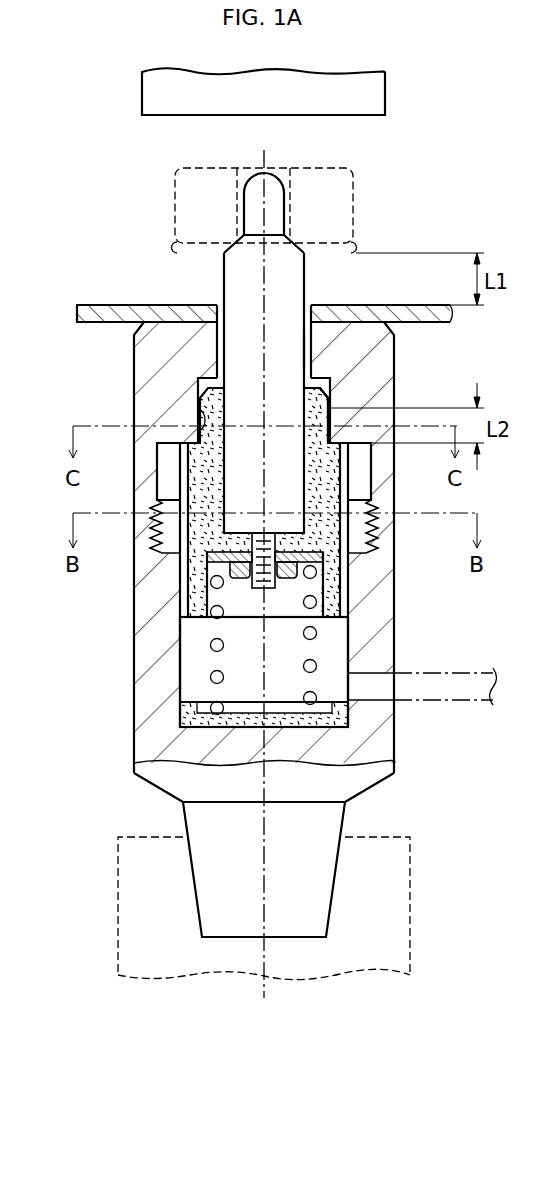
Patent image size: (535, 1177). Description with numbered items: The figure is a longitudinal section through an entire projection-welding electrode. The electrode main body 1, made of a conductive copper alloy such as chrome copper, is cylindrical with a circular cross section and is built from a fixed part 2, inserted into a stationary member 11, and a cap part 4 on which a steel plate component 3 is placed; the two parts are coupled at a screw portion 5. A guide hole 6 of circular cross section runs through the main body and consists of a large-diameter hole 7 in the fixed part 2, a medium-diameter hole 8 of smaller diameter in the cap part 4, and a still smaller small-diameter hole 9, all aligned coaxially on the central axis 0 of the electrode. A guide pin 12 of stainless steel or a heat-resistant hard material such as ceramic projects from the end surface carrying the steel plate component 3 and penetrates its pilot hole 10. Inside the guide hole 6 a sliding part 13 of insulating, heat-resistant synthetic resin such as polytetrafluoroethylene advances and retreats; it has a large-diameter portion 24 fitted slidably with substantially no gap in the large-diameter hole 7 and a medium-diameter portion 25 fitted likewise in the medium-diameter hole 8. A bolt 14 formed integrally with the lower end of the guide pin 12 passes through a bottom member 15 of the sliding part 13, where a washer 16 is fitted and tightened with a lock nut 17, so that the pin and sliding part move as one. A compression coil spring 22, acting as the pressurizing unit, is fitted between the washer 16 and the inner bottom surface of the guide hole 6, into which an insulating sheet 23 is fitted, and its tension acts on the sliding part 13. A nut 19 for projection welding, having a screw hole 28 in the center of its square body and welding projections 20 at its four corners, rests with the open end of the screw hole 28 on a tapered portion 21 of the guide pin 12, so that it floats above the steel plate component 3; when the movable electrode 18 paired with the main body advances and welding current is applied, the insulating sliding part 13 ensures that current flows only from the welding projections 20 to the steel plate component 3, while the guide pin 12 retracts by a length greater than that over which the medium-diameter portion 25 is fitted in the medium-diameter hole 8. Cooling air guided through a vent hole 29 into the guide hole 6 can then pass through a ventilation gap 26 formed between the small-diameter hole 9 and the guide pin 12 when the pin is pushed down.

The central axis 0 is at (263, 576).
The electrode main body 1 is at (94, 376).
The fixed part 2 is at (134, 752).
The steel plate component 3 is at (102, 305).
The cap part 4 is at (134, 357).
The screw portion 5 is at (156, 540).
The guide hole 6 is at (194, 665).
The large-diameter hole 7 is at (188, 640).
The medium-diameter hole 8 is at (200, 420).
The small-diameter hole 9 is at (310, 362).
The pilot hole 10 is at (218, 301).
The stationary member 11 is at (410, 913).
The guide pin 12 is at (305, 280).
The sliding part 13 is at (195, 466).
The bolt 14 is at (250, 535).
The bottom member 15 is at (291, 552).
The washer 16 is at (246, 540).
The lock nut 17 is at (284, 540).
The movable electrode 18 is at (385, 92).
The nut 19 is at (354, 193).
The welding projection 20 is at (170, 240).
The tapered portion 21 is at (253, 245).
The compression coil spring 22 is at (317, 633).
The insulating sheet 23 is at (293, 727).
The large-diameter portion 24 is at (366, 538).
The medium-diameter portion 25 is at (320, 418).
The ventilation gap 26 is at (303, 350).
The screw hole 28 is at (279, 172).
The vent hole 29 is at (382, 690).